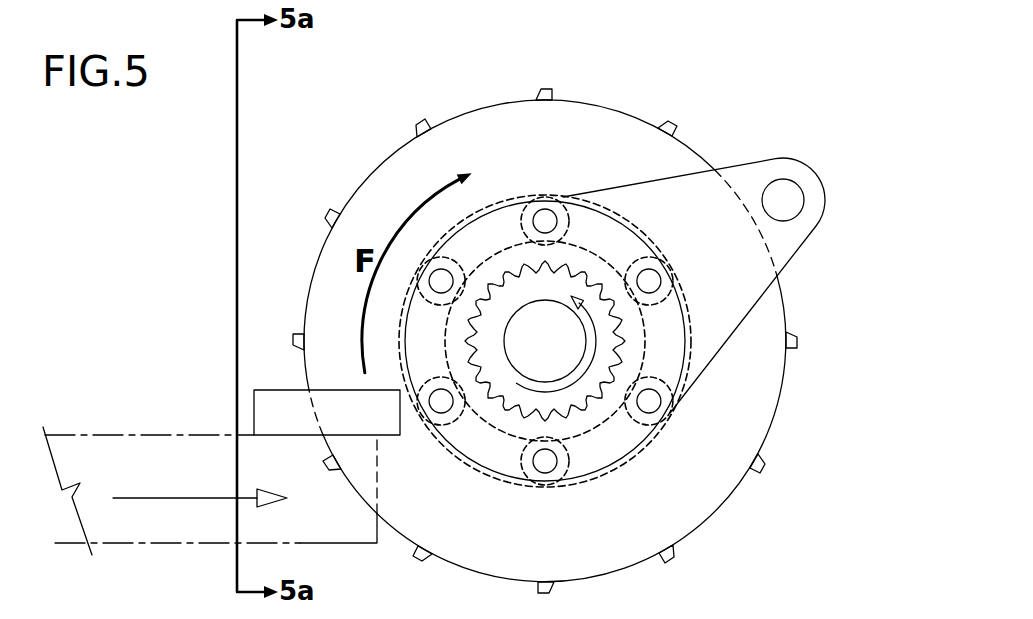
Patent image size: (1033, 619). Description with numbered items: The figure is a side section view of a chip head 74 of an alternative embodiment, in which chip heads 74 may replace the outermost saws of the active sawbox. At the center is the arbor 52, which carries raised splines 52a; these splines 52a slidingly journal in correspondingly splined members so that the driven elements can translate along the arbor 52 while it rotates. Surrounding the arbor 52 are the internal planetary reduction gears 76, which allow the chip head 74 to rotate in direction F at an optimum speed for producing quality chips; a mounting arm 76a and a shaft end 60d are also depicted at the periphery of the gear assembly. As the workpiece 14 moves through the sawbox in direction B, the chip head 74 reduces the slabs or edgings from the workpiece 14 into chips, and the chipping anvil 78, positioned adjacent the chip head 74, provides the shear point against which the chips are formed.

The workpiece 14 is at (248, 457).
The arbor 52 is at (545, 341).
The raised splines 52a is at (465, 338).
The shaft end 60d is at (773, 197).
The chip head 74 is at (484, 104).
The internal planetary reduction gears 76 is at (649, 403).
The mounting arm 76a is at (757, 160).
The chipping anvil 78 is at (283, 390).